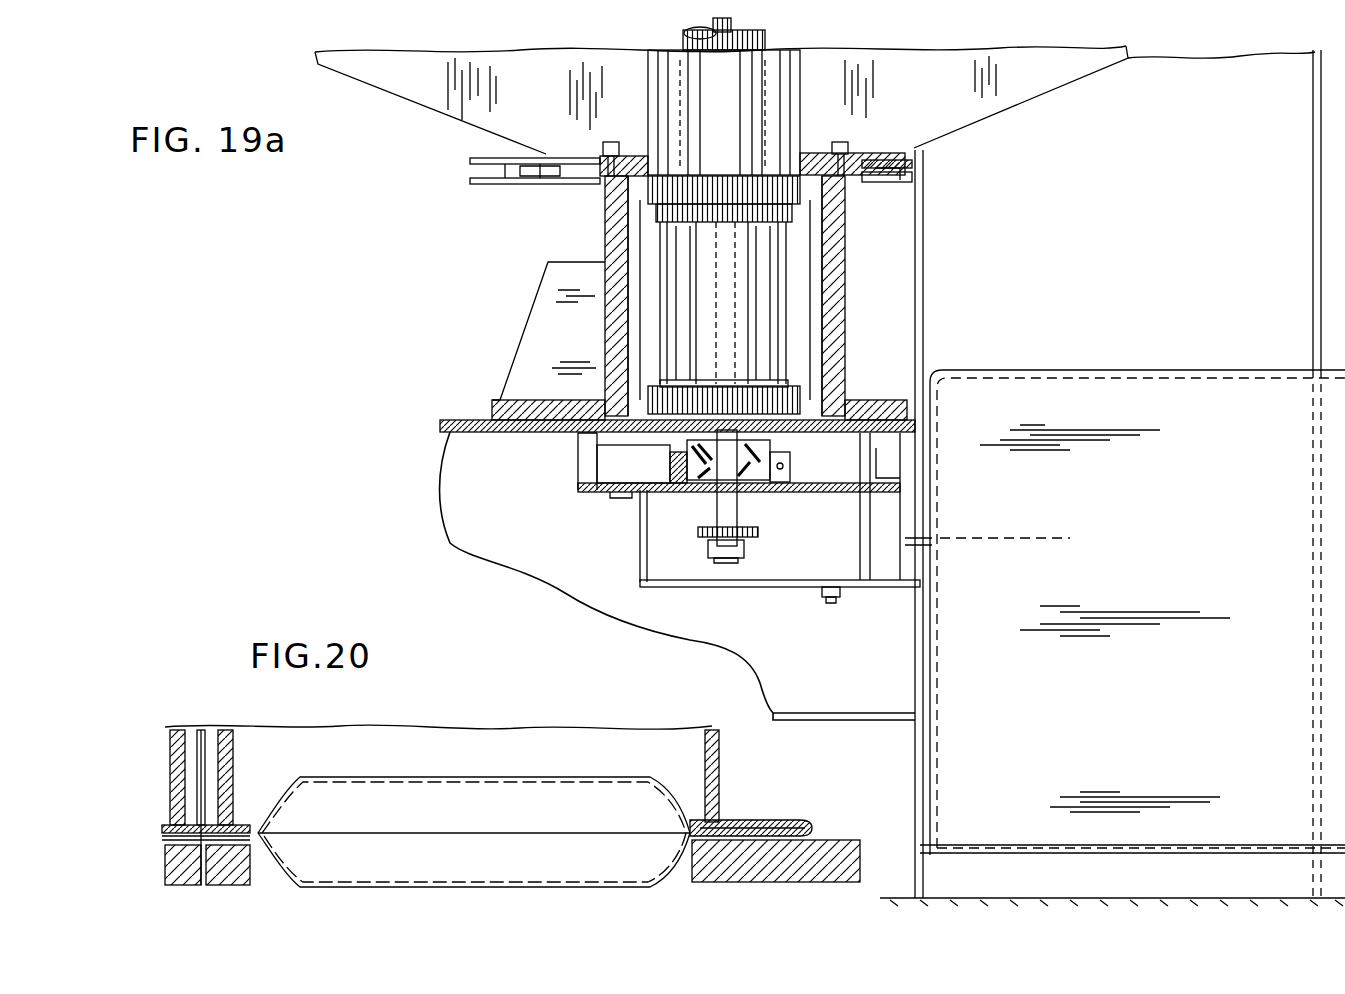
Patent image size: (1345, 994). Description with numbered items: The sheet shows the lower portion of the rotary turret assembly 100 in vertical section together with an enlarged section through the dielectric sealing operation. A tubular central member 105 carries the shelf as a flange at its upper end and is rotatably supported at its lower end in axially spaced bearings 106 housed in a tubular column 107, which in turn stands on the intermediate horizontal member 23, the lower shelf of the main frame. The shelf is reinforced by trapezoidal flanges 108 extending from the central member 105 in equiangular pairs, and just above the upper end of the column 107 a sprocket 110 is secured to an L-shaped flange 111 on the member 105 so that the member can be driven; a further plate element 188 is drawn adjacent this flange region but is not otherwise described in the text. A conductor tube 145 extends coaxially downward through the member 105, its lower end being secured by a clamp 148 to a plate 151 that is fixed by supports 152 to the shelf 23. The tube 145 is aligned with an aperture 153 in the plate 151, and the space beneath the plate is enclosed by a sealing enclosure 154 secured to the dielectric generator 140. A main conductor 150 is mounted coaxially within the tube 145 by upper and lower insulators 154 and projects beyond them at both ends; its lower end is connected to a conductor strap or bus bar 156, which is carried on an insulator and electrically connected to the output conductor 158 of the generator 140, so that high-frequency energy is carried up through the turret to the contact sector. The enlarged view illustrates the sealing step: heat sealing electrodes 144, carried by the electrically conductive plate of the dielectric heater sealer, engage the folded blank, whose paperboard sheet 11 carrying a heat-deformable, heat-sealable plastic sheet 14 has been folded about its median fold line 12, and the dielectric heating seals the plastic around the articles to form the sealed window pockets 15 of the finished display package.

In FIG. 19A, the bag filling apparatus 100 is at (450, 148).
In FIG. 19A, the tubular central member 105 is at (805, 92).
In FIG. 19A, the bearings 106 is at (790, 186).
In FIG. 19A, the tubular column 107 is at (604, 226).
In FIG. 19A, the trapezoidal flanges 108 is at (474, 104).
In FIG. 19A, the sprocket 110 is at (888, 176).
In FIG. 19A, the L-shaped flange 111 is at (636, 162).
In FIG. 19A, the tube 145 is at (765, 38).
In FIG. 19A, the support plates 188 is at (560, 186).
In FIG. 19A, the intermediate horizontal member 23 is at (445, 432).
In FIG. 19A, the clamp 148 is at (668, 464).
In FIG. 19A, the main conductor 150 is at (736, 532).
In FIG. 19A, the plate 151 is at (604, 490).
In FIG. 19A, the supports 152 is at (576, 466).
In FIG. 19A, the aperture 153 is at (712, 490).
In FIG. 19A, the insulators 154 is at (740, 486).
In FIG. 19A, the conductor strap or bus bar 156 is at (852, 590).
In FIG. 19A, the output conductor 158 is at (908, 556).
In FIG. 19A, the dielectric generator 140 is at (1212, 546).
In FIG. 20, the heat sealing electrodes 144 is at (246, 722).
In FIG. 20, the pockets 15 is at (418, 776).
In FIG. 20, the sheet of paperboard 11 is at (732, 820).
In FIG. 20, the sheet of plastic 14 is at (775, 828).
In FIG. 20, the median fold line 12 is at (812, 836).